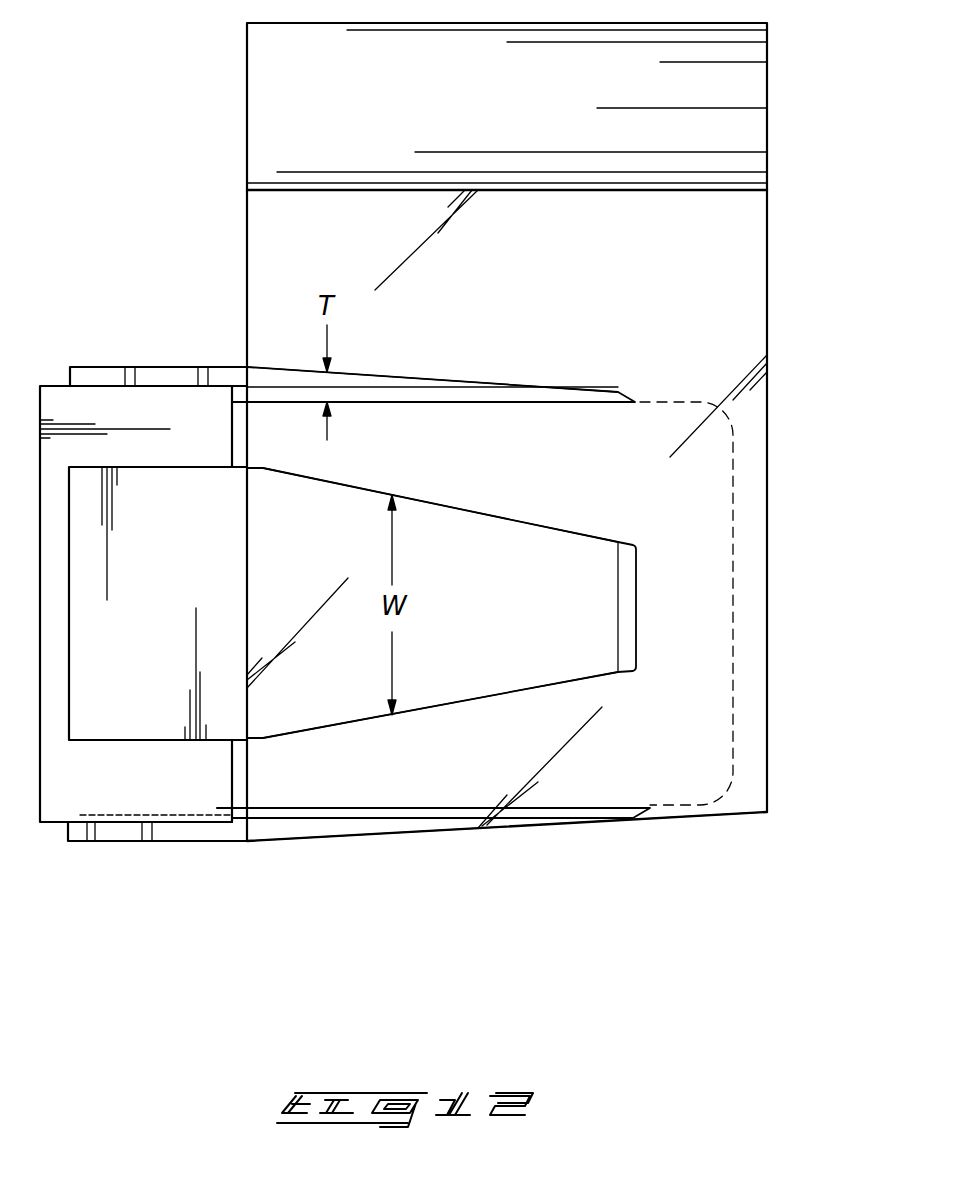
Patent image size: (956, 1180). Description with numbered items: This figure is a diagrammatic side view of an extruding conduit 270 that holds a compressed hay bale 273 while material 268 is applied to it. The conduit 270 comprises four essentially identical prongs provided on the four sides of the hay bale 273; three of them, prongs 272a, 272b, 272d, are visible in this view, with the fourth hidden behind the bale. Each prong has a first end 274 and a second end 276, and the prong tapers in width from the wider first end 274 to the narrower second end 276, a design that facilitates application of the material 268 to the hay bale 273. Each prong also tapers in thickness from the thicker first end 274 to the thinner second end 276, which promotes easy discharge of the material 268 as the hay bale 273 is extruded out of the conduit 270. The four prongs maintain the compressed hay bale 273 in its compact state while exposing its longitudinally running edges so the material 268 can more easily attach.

The material 268 is at (720, 237).
The conduit 270 is at (118, 903).
The prong 272a is at (457, 545).
The prong 272b is at (300, 830).
The prong 272d is at (380, 383).
The hay bale 273 is at (698, 508).
The first end 274 is at (270, 378).
The second end 276 is at (593, 390).